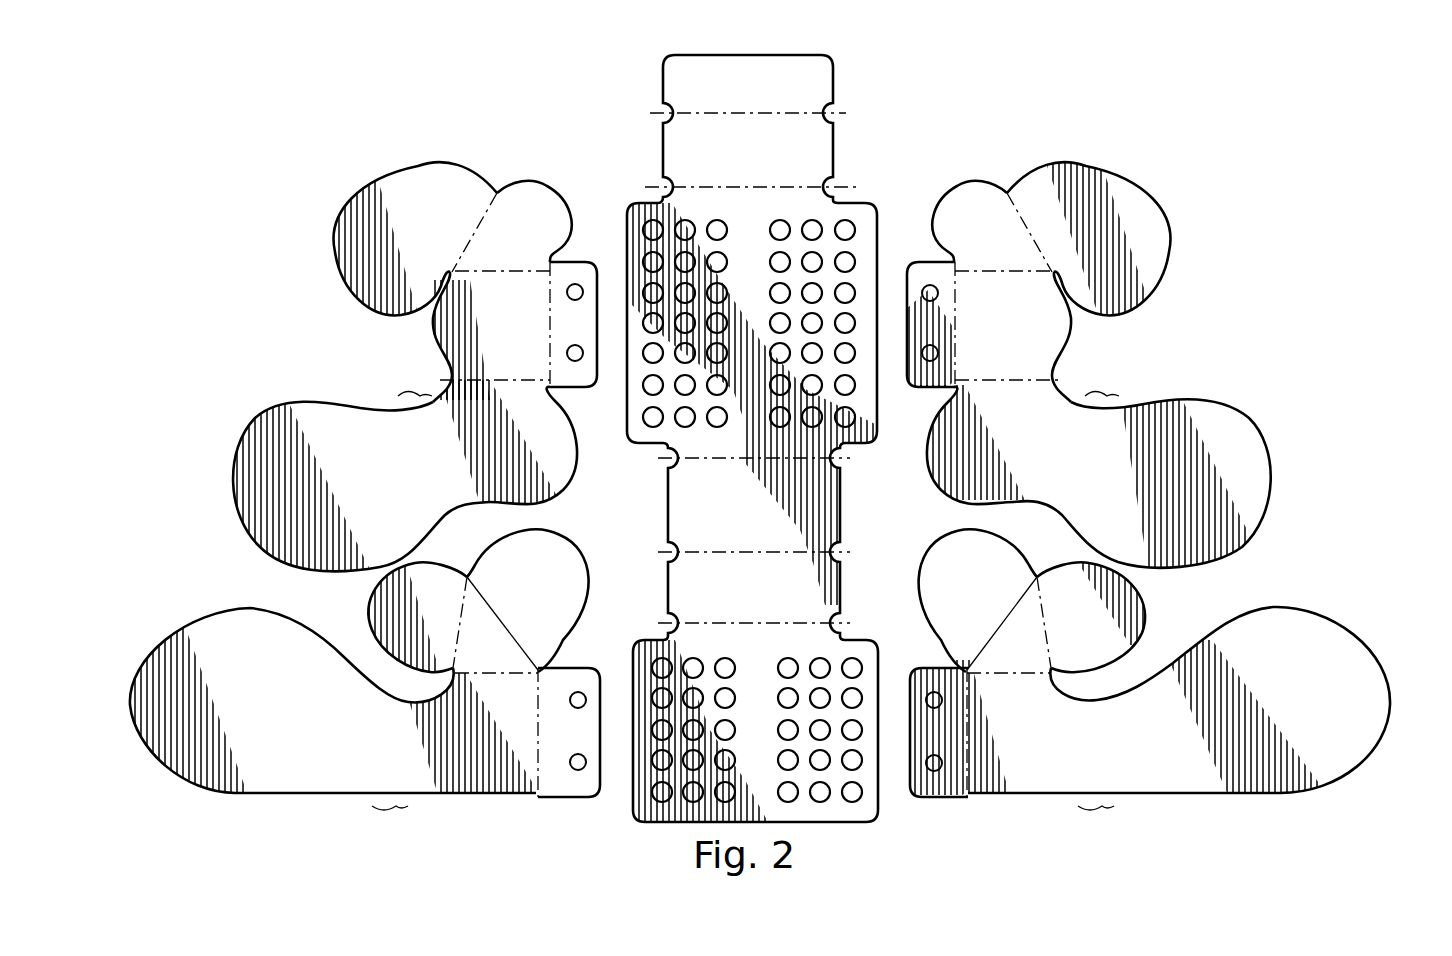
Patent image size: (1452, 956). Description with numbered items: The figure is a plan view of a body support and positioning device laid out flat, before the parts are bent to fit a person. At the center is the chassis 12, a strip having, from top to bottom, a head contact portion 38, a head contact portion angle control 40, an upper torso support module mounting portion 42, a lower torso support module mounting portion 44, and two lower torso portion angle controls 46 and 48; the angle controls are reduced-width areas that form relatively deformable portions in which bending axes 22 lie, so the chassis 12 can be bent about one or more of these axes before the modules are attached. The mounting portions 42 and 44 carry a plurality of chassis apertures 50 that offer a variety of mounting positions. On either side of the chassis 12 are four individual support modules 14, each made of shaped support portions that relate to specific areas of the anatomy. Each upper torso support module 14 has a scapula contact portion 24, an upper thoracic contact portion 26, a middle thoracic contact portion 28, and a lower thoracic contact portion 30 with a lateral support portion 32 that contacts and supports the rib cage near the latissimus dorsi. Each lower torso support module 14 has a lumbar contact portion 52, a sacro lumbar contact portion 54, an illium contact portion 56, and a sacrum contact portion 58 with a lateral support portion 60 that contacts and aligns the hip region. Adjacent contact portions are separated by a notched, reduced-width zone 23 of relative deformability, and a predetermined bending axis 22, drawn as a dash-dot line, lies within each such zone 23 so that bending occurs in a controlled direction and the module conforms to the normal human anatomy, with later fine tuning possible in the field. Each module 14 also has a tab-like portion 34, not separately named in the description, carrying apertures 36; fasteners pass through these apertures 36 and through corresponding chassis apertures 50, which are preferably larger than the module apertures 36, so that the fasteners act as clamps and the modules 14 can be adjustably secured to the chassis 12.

The chassis 12 is at (835, 63).
The support module 14 is at (785, 474).
The predetermined bending axis 22 is at (497, 193).
The zone of relative deformability 23 is at (750, 602).
The scapula contact portion 24 is at (382, 272).
The upper thoracic contact portion 26 is at (545, 207).
The middle thoracic contact portion 28 is at (495, 330).
The lower thoracic contact portion 30 is at (560, 432).
The lateral support portion 32 is at (330, 443).
The tab 34 is at (580, 265).
The aperture 36 is at (584, 353).
The head contact portion 38 is at (681, 80).
The head contact portion angle control 40 is at (690, 152).
The upper torso support module mounting portion 42 is at (655, 243).
The lower torso support module mounting portion 44 is at (682, 781).
The lower torso portion angle control 46 is at (702, 505).
The lower torso portion angle control 48 is at (702, 586).
The chassis aperture 50 is at (852, 416).
The lumbar contact portion 52 is at (955, 550).
The sacro lumbar contact portion 54 is at (1020, 645).
The illium contact portion 56 is at (1100, 610).
The sacrum contact portion 58 is at (1007, 786).
The lateral support portion 60 is at (1335, 660).